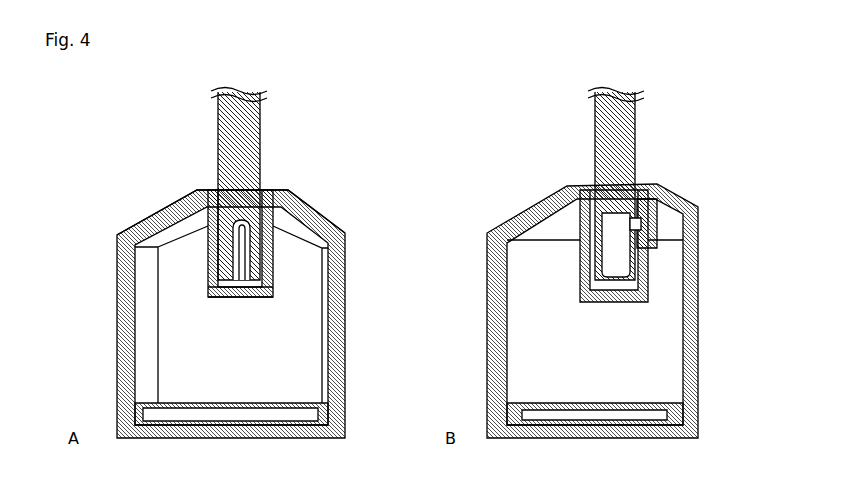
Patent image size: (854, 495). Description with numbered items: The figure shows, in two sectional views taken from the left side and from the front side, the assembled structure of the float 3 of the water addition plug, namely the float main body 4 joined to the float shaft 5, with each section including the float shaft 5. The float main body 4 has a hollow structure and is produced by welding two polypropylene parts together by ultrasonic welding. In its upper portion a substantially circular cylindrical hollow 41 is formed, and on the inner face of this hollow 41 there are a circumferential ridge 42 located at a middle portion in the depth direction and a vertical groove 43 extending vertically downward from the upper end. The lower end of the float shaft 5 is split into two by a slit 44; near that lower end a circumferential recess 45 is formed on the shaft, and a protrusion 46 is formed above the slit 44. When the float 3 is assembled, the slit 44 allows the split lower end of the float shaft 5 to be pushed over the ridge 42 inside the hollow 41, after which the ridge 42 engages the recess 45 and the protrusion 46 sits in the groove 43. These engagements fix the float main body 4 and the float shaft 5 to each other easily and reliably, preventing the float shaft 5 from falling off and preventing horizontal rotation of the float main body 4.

The float 3 is at (333, 173).
The float main body 4 is at (347, 292).
The float shaft 5 is at (252, 128).
The hollow 41 is at (196, 196).
The circumferential ridge 42 is at (212, 250).
The vertical groove 43 is at (670, 192).
The slit 44 is at (247, 297).
The circumferential recess 45 is at (268, 248).
The protrusion 46 is at (640, 183).